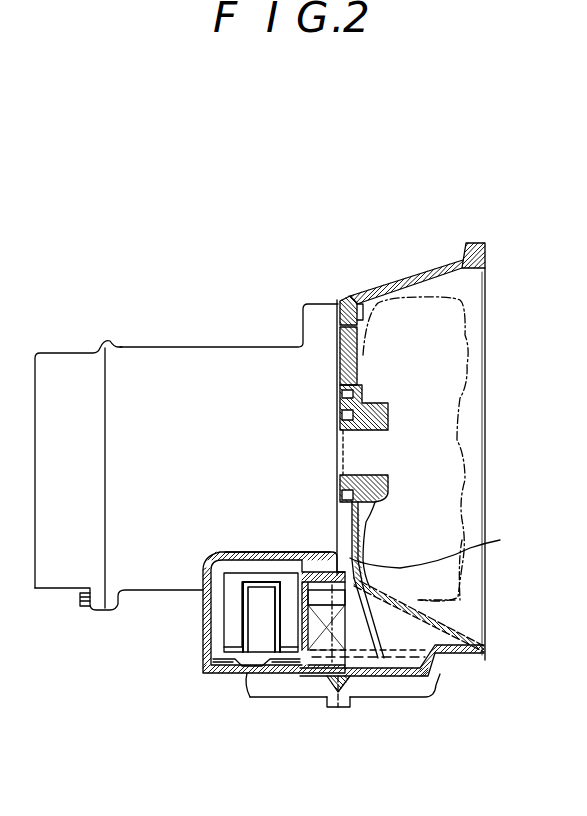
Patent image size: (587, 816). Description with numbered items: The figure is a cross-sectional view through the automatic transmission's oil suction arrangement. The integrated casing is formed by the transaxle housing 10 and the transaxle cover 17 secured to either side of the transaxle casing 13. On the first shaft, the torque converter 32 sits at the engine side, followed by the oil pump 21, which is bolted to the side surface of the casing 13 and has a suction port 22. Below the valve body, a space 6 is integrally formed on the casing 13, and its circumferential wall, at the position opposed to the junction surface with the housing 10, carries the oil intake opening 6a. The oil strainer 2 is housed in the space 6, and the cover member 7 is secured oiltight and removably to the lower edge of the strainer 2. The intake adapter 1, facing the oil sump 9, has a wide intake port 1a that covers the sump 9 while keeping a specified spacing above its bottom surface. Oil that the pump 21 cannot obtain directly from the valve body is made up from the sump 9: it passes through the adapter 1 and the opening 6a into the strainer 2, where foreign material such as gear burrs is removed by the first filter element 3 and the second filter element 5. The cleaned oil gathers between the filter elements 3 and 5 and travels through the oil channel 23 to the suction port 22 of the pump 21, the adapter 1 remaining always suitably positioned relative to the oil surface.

The intake adapter 1 is at (383, 660).
The intake port 1a is at (350, 680).
The oil strainer 2 is at (200, 655).
The first filter element 3 is at (275, 620).
The second filter element 5 is at (240, 612).
The space 6 is at (218, 606).
The oil intake opening 6a is at (342, 604).
The cover member 7 is at (225, 665).
The oil sump 9 is at (422, 672).
The transaxle housing 10 is at (478, 242).
The transaxle casing 13 is at (203, 345).
The transaxle cover 17 is at (60, 352).
The oil pump 21 is at (365, 402).
The suction port 22 is at (500, 540).
The oil channel 23 is at (307, 560).
The torque converter 32 is at (466, 301).